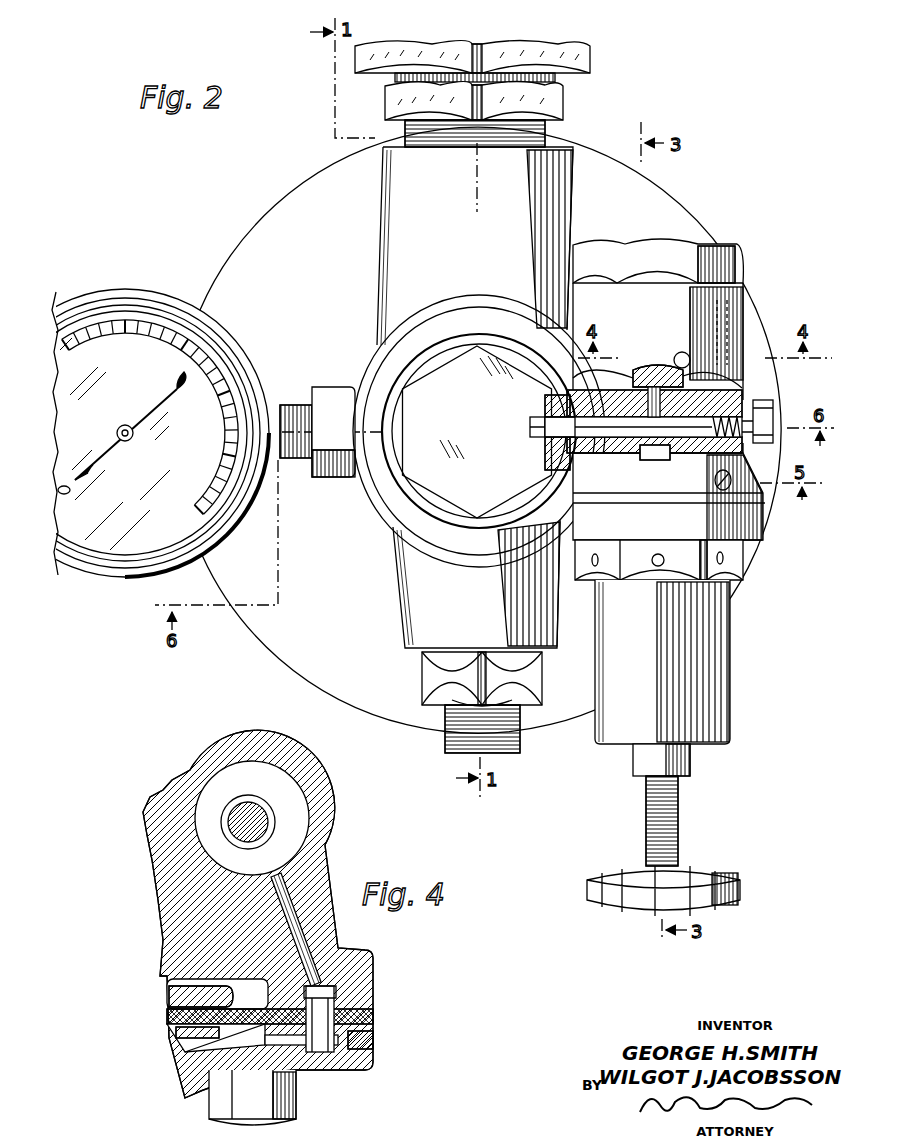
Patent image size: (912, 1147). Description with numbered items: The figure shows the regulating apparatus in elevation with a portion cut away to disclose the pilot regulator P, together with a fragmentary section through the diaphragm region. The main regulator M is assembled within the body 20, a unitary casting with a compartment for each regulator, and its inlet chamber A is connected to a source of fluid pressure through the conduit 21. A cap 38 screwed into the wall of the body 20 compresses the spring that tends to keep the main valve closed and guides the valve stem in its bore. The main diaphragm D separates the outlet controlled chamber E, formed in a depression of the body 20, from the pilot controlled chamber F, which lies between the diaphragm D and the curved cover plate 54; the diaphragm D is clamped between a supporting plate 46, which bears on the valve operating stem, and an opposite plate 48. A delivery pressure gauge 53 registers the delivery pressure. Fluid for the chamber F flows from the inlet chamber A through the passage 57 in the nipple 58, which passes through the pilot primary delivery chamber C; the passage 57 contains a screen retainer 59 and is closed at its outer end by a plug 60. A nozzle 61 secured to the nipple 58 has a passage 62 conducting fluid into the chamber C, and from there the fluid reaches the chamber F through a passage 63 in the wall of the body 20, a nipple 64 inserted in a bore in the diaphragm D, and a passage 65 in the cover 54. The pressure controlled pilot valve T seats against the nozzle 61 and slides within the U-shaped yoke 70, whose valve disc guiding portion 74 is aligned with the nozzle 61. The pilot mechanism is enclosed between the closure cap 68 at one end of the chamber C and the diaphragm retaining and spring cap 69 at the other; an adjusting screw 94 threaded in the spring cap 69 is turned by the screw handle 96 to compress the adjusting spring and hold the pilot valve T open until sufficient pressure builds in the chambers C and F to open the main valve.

In FIG. 2, the body 20 is at (381, 239).
In FIG. 4, the body 20 is at (157, 893).
In FIG. 2, the conduit 21 is at (597, 72).
In FIG. 2, the cap 38 is at (440, 378).
In FIG. 4, the diaphragm supporting plate 46 is at (180, 982).
In FIG. 4, the plate 48 is at (176, 1032).
In FIG. 2, the delivery pressure gauge 53 is at (118, 579).
In FIG. 4, the cover plate 54 is at (373, 1063).
In FIG. 2, the passage 57 is at (552, 430).
In FIG. 2, the nipple 58 is at (612, 405).
In FIG. 2, the screen retainer 59 is at (606, 425).
In FIG. 2, the plug 60 is at (763, 400).
In FIG. 2, the nozzle 61 is at (680, 352).
In FIG. 2, the passage 62 is at (672, 430).
In FIG. 2, the passage 63 is at (693, 353).
In FIG. 4, the passage 63 is at (302, 951).
In FIG. 2, the nipple 64 is at (727, 347).
In FIG. 4, the nipple 64 is at (338, 993).
In FIG. 4, the passage 65 is at (286, 1040).
In FIG. 2, the closure cap 68 is at (737, 254).
In FIG. 4, the closure cap 68 is at (275, 796).
In FIG. 2, the diaphragm retaining and spring cap 69 is at (722, 681).
In FIG. 2, the yoke 70 is at (657, 460).
In FIG. 2, the valve disc guiding portion 74 is at (653, 392).
In FIG. 4, the valve disc guiding portion 74 is at (241, 806).
In FIG. 2, the adjusting screw 94 is at (680, 804).
In FIG. 2, the screw handle 96 is at (722, 871).
In FIG. 2, the main regulator M is at (240, 213).
In FIG. 2, the pilot regulator P is at (684, 543).
In FIG. 2, the pilot valve T is at (601, 393).
In FIG. 4, the pilot valve T is at (285, 815).
In FIG. 2, the inlet chamber A is at (545, 409).
In FIG. 2, the pilot primary delivery chamber C is at (697, 387).
In FIG. 4, the pilot primary delivery chamber C is at (267, 781).
In FIG. 4, the main diaphragm D is at (340, 1017).
In FIG. 4, the outlet controlled chamber E is at (182, 980).
In FIG. 4, the pilot controlled chamber F is at (184, 1047).